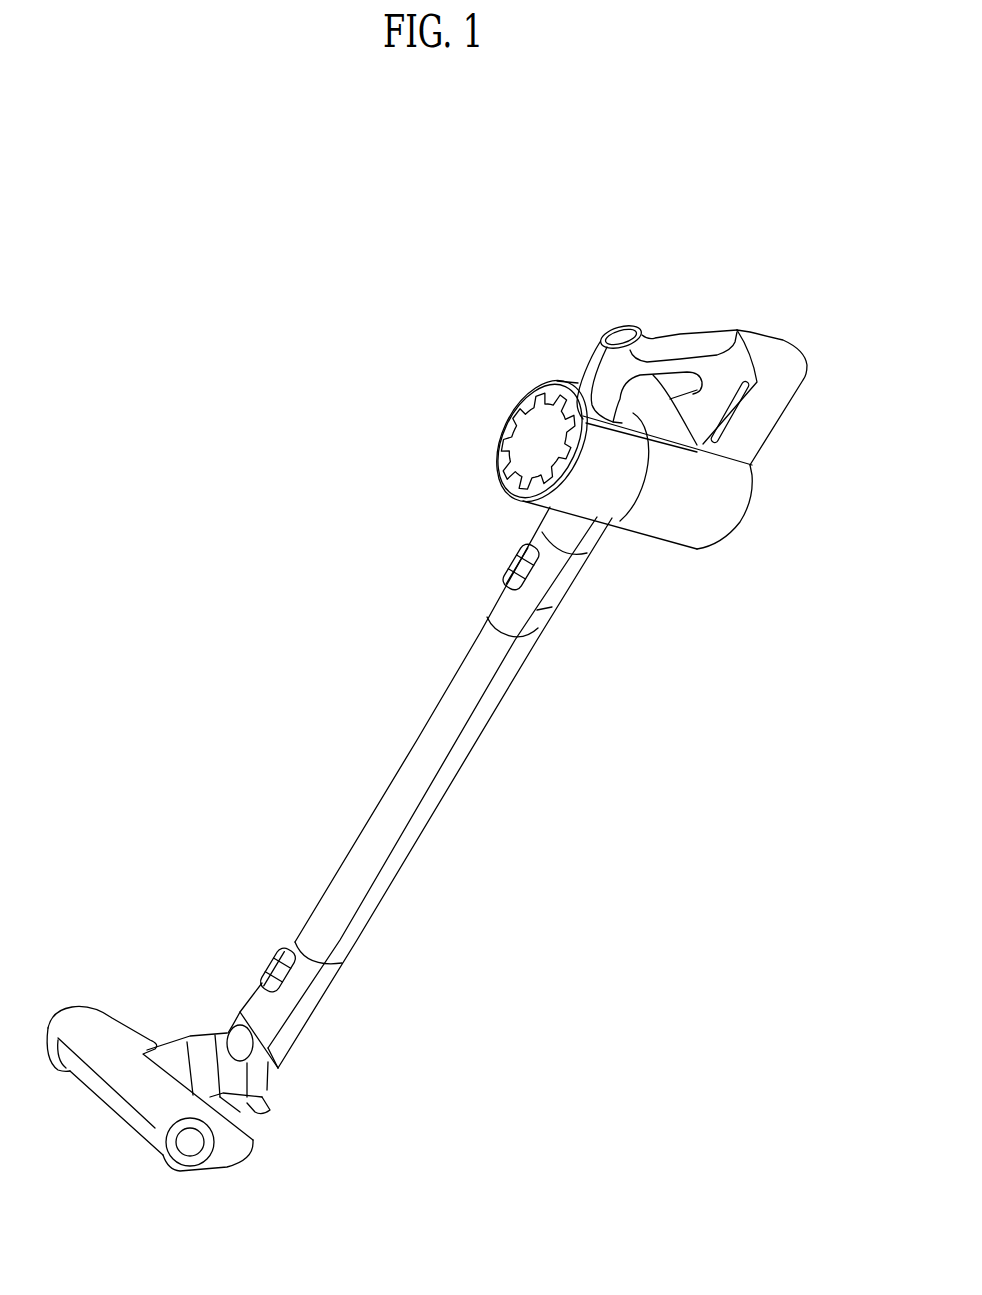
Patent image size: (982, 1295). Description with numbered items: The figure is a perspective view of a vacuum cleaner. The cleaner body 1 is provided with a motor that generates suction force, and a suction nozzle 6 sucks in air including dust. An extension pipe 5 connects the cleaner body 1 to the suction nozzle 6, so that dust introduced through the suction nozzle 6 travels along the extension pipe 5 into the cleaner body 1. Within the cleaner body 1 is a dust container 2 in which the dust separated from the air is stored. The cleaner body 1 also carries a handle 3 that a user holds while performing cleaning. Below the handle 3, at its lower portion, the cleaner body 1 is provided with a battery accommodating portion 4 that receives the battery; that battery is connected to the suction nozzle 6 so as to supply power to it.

The cleaner body 1 is at (590, 498).
The dust container 2 is at (713, 507).
The handle 3 is at (681, 347).
The battery accommodating portion 4 is at (762, 413).
The extension pipe 5 is at (387, 812).
The suction nozzle 6 is at (85, 1005).